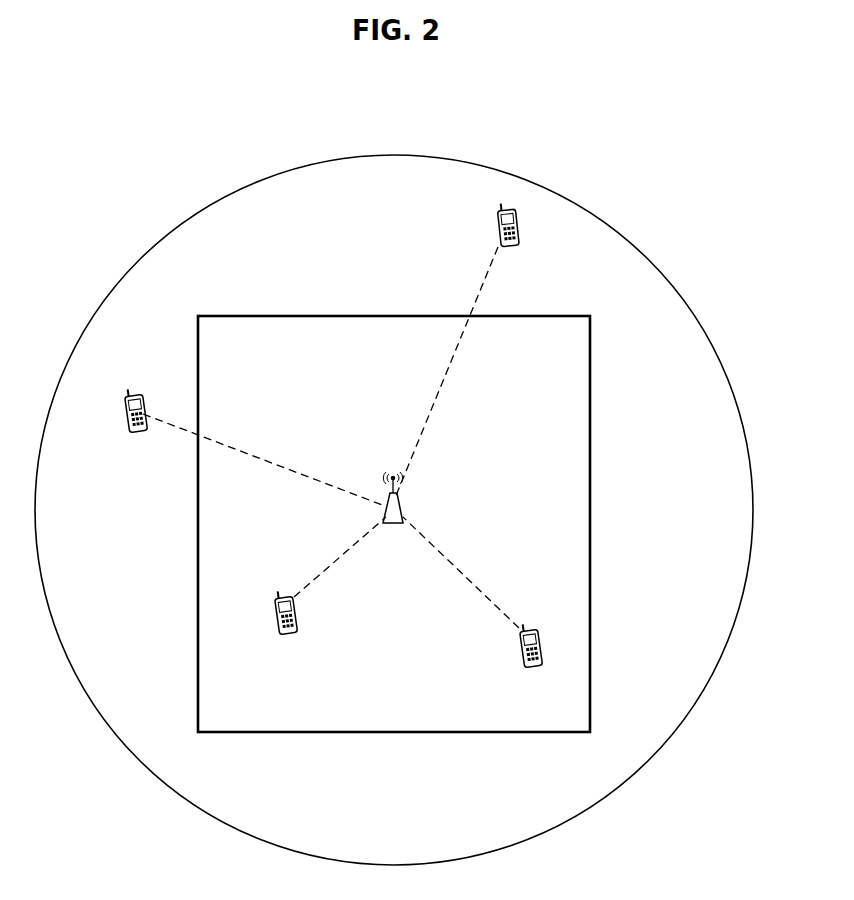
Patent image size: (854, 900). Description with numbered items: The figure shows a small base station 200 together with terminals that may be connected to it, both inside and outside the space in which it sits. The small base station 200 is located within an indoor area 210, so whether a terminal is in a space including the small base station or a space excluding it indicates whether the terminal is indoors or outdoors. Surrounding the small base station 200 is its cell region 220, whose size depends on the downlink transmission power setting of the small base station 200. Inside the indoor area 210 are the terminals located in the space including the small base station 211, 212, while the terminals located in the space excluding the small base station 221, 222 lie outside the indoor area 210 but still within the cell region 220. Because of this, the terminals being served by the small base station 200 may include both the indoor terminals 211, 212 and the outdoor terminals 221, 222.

The small base station 200 is at (403, 508).
The indoor area 210 is at (591, 510).
The terminal located in a space including the small base station 211 is at (280, 590).
The terminal located in a space including the small base station 212 is at (528, 627).
The cell region 220 is at (393, 155).
The terminal located in a space excluding the small base station 221 is at (131, 391).
The terminal located in a space excluding the small base station 222 is at (496, 219).